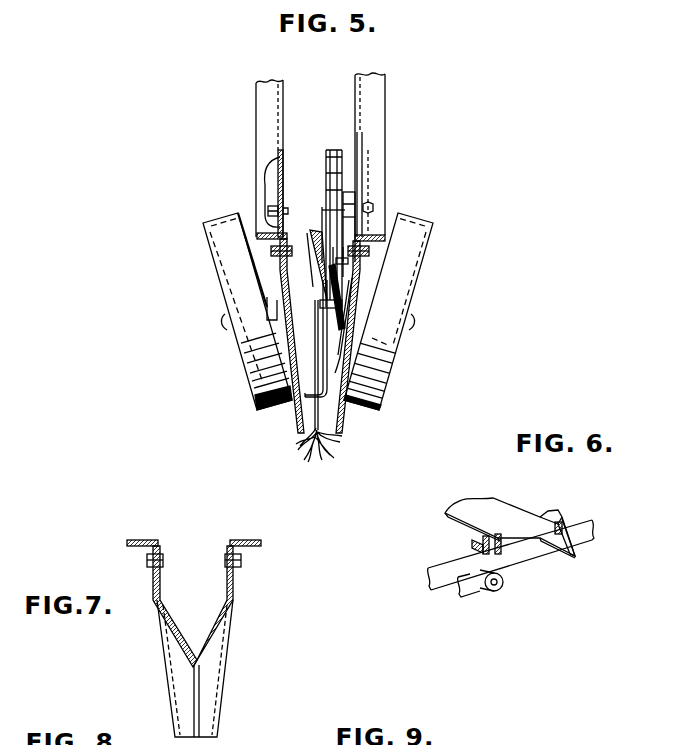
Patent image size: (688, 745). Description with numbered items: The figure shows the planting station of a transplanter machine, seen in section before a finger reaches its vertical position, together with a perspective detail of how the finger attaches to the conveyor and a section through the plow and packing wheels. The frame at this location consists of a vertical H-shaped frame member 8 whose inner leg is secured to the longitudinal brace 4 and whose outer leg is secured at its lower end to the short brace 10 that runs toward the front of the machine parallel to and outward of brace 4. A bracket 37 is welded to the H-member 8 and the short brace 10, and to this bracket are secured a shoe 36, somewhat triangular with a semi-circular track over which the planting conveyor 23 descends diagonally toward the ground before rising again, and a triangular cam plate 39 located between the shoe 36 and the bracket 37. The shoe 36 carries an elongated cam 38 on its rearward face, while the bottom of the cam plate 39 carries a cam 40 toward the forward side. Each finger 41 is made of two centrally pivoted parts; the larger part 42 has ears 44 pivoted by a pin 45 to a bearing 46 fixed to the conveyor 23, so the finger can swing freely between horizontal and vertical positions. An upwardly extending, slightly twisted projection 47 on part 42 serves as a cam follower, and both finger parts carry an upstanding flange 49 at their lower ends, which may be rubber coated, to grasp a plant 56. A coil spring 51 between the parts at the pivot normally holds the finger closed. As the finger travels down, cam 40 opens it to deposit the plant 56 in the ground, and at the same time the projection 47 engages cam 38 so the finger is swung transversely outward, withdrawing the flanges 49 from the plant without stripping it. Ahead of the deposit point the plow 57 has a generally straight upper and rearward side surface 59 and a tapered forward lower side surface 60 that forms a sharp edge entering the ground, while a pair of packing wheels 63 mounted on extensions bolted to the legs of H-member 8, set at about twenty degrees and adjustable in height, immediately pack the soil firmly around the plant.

In FIG. 5, the longitudinal brace 4 is at (257, 236).
In FIG. 7, the longitudinal brace 4 is at (158, 540).
In FIG. 5, the vertical H-shaped frame member 8 is at (283, 128).
In FIG. 5, the short brace 10 is at (382, 233).
In FIG. 7, the short brace 10 is at (253, 540).
In FIG. 5, the planting conveyor 23 is at (334, 153).
In FIG. 6, the planting conveyor 23 is at (464, 594).
In FIG. 5, the shoe 36 is at (336, 210).
In FIG. 5, the bracket 37 is at (362, 160).
In FIG. 5, the elongated cam 38 is at (323, 229).
In FIG. 5, the cam plate 39 is at (327, 201).
In FIG. 5, the cam 40 is at (348, 262).
In FIG. 5, the finger 41 is at (390, 358).
In FIG. 6, the larger finger part 42 is at (508, 511).
In FIG. 5, the ears 44 is at (320, 253).
In FIG. 6, the ears 44 is at (492, 538).
In FIG. 6, the pin 45 is at (480, 546).
In FIG. 6, the bearing 46 is at (501, 568).
In FIG. 5, the projection 47 is at (341, 283).
In FIG. 6, the projection 47 is at (578, 555).
In FIG. 5, the upstanding flange 49 is at (309, 403).
In FIG. 5, the coil spring 51 is at (346, 304).
In FIG. 5, the plant 56 is at (331, 447).
In FIG. 7, the plow 57 is at (233, 598).
In FIG. 5, the upper and rearward side surface 59 is at (243, 346).
In FIG. 7, the forward lower side surface 60 is at (180, 694).
In FIG. 5, the packing wheels 63 is at (432, 282).